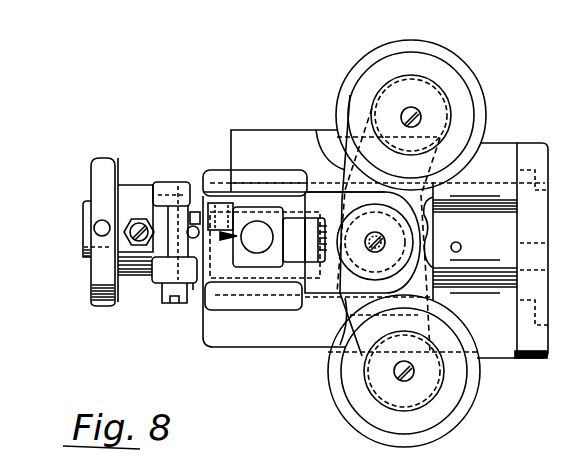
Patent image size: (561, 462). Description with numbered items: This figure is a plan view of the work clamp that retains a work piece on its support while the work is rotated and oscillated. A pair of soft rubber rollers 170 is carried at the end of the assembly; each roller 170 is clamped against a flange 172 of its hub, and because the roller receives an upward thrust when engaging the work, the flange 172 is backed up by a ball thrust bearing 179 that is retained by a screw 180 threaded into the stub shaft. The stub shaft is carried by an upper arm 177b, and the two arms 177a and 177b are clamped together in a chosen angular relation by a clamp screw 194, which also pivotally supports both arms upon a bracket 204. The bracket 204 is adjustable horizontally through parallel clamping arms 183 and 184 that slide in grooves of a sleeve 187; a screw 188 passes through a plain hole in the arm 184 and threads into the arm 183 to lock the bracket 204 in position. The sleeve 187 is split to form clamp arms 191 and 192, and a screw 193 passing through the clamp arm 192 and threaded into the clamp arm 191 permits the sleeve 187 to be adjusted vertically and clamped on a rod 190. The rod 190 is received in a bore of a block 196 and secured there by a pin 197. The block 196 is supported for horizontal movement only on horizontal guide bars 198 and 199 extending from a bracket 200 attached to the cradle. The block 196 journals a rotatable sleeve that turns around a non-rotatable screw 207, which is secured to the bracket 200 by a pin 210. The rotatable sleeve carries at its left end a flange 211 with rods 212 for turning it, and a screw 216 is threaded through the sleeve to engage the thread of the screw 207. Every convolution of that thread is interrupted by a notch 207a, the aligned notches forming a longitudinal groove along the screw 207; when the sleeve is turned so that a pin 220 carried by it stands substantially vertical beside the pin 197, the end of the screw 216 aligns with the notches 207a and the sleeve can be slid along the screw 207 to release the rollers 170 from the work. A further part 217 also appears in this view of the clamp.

The soft rubber roller 170 is at (424, 48).
The flange 172 is at (455, 71).
The lower arm 177a is at (322, 140).
The upper arm 177b is at (345, 300).
The ball thrust bearing 179 is at (443, 82).
The screw 180 is at (424, 94).
The clamping arm 183 is at (162, 182).
The clamping arm 184 is at (157, 282).
The sleeve 187 is at (275, 262).
The screw 188 is at (185, 304).
The rod 190 is at (261, 222).
The clamp arm 191 is at (200, 213).
The clamp arm 192 is at (197, 286).
The screw 193 is at (227, 200).
The clamp screw 194 is at (384, 240).
The block 196 is at (213, 302).
The pin 197 is at (168, 222).
The horizontal guide bar 198 is at (275, 135).
The horizontal guide bar 199 is at (279, 348).
The bracket 200 is at (498, 142).
The bracket 204 is at (255, 189).
The screw 207 is at (448, 198).
The notch 207a is at (471, 229).
The pin 210 is at (462, 247).
The flange 211 is at (98, 166).
The rod 212 is at (99, 222).
The screw 216 is at (107, 243).
The threaded shaft 217 is at (127, 243).
The pin 220 is at (198, 220).